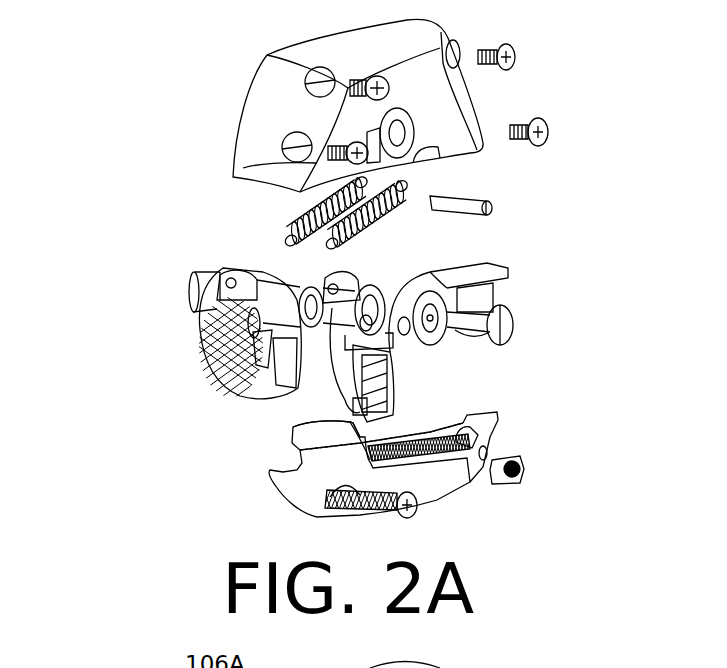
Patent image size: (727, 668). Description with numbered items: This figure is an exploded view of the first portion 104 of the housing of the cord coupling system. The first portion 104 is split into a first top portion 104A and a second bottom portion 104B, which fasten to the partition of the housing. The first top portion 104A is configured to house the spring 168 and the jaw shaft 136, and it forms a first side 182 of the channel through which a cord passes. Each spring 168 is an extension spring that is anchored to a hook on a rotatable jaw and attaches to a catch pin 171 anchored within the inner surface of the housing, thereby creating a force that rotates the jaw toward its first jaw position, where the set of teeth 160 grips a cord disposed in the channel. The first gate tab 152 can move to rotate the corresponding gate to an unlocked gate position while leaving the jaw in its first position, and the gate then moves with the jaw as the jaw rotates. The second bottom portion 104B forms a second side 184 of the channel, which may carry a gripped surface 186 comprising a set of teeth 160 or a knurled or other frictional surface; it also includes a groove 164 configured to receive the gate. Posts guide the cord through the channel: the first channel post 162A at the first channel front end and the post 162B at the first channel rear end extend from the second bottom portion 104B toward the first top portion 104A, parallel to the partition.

The first portion 104 is at (152, 81).
The first top portion 104A is at (255, 80).
The second bottom portion 104B is at (285, 487).
The jaw shaft 136 is at (195, 291).
The first gate tab 152 is at (357, 378).
The set of teeth 160 is at (212, 360).
The first channel post 162A is at (303, 450).
The first channel post 162B is at (498, 421).
The groove 164 is at (467, 418).
The spring 168 is at (300, 218).
The catch pin 171 is at (490, 211).
The first side 182 is at (457, 153).
The second side 184 is at (432, 430).
The gripped surface 186 is at (417, 455).